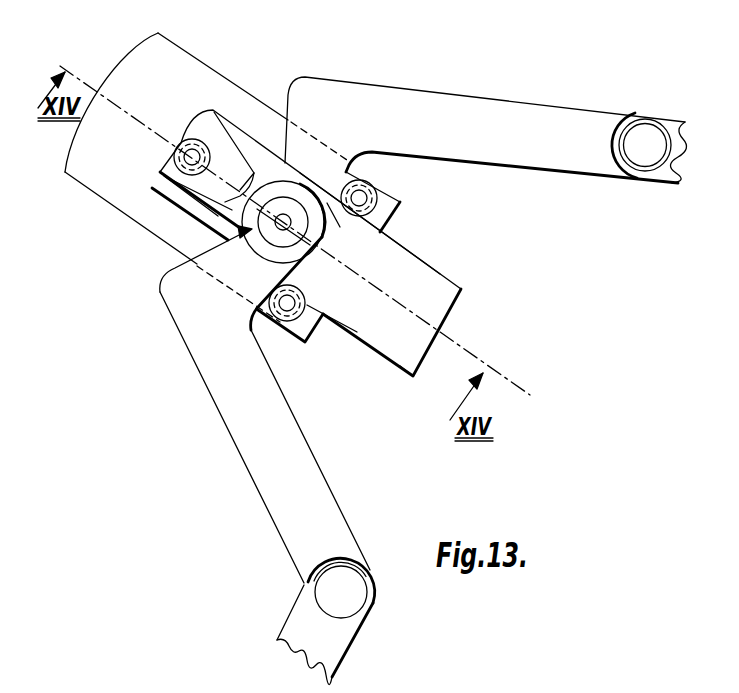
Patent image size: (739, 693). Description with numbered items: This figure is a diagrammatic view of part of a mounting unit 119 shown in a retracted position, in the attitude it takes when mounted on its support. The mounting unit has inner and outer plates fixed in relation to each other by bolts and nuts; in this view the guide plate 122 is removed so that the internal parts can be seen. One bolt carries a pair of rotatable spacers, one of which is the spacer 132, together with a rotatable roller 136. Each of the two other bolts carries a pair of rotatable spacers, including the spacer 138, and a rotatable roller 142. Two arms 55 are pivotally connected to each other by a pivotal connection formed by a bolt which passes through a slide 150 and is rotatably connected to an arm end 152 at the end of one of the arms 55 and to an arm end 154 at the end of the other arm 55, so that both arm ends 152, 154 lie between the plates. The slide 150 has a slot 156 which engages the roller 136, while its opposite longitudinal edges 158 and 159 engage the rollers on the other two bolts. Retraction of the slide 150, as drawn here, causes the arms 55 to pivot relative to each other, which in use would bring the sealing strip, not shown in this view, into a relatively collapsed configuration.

The arms 55 is at (579, 156).
The mounting unit 119 is at (108, 207).
The outer plate 122 is at (213, 66).
The rotatable spacer 132 is at (183, 140).
The rotatable roller 136 is at (176, 153).
The rotatable spacer 138 is at (400, 202).
The rotatable roller 142 is at (378, 194).
The slide 150 is at (351, 267).
The arm end 152 is at (200, 248).
The arm end 154 is at (332, 203).
The slot 156 is at (225, 208).
The longitudinal edge 158 is at (438, 270).
The longitudinal edge 159 is at (393, 364).